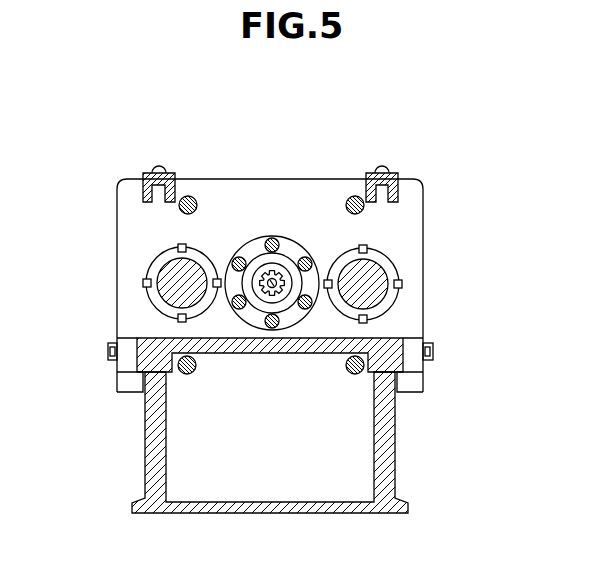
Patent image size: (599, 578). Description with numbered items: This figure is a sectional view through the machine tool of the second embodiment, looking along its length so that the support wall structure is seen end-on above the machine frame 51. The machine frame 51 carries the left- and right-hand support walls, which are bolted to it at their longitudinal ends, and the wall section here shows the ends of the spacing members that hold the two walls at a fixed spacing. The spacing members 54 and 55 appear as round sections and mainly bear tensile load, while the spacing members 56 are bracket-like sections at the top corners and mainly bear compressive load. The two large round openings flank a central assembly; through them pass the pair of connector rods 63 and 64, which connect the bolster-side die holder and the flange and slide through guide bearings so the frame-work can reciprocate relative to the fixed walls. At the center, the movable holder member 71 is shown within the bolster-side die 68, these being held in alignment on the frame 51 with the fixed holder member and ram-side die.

The machine frame 51 is at (396, 477).
The spacing member 54 is at (353, 196).
The spacing member 55 is at (197, 196).
The spacing member 56 is at (178, 187).
The connector rod 63 is at (380, 270).
The connector rod 64 is at (167, 280).
The bolster-side die 68 is at (283, 272).
The movable holder member 71 is at (269, 277).